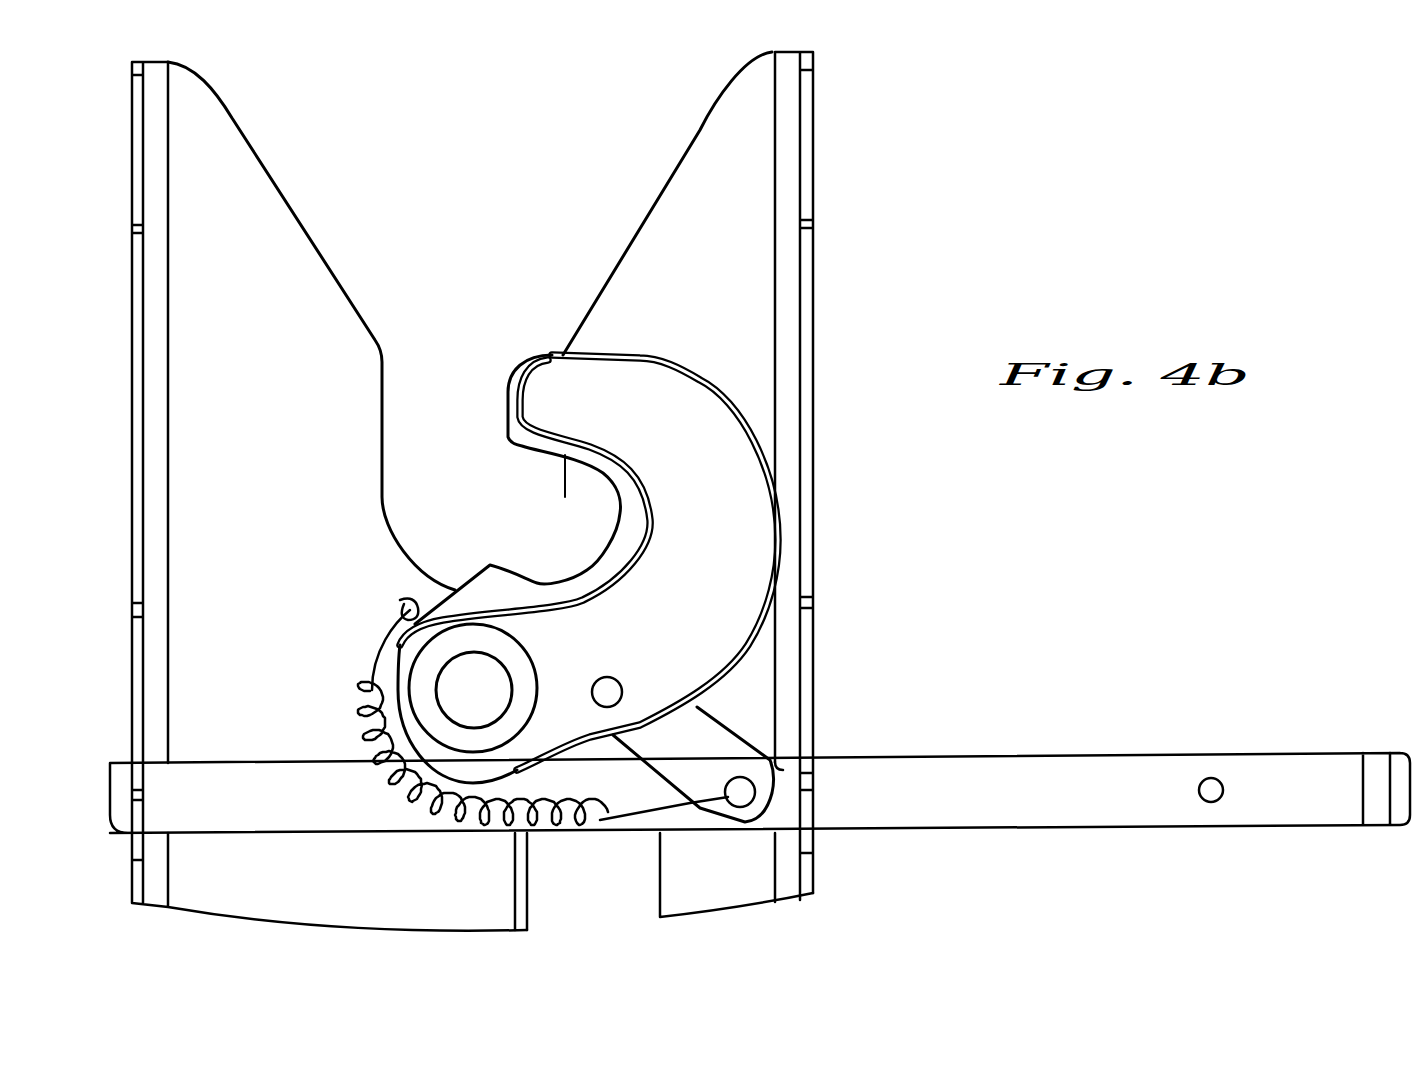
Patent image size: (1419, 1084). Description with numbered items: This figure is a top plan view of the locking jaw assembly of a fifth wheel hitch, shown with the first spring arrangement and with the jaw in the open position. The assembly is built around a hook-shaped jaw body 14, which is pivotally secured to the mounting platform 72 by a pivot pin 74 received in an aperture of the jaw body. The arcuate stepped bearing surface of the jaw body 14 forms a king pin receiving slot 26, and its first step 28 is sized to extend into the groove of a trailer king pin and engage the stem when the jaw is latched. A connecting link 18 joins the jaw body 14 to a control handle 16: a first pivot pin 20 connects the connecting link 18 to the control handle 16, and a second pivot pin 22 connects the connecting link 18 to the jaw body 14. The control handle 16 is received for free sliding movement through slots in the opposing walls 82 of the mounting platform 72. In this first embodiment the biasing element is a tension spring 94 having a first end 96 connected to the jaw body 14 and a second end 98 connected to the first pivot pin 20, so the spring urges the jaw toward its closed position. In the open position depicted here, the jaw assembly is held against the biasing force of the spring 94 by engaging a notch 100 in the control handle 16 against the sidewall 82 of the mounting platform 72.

The jaw body 14 is at (748, 542).
The control handle 16 is at (893, 820).
The connecting link 18 is at (687, 727).
The first pivot pin 20 is at (735, 795).
The second pivot pin 22 is at (612, 686).
The king pin receiving slot 26 is at (505, 515).
The first step 28 is at (613, 493).
The mounting platform 72 is at (725, 205).
The pivot pin 74 is at (460, 685).
The opposing walls 82 is at (803, 278).
The tension spring 94 is at (400, 832).
The first end 96 is at (400, 600).
The second end 98 is at (772, 805).
The notch 100 is at (783, 770).